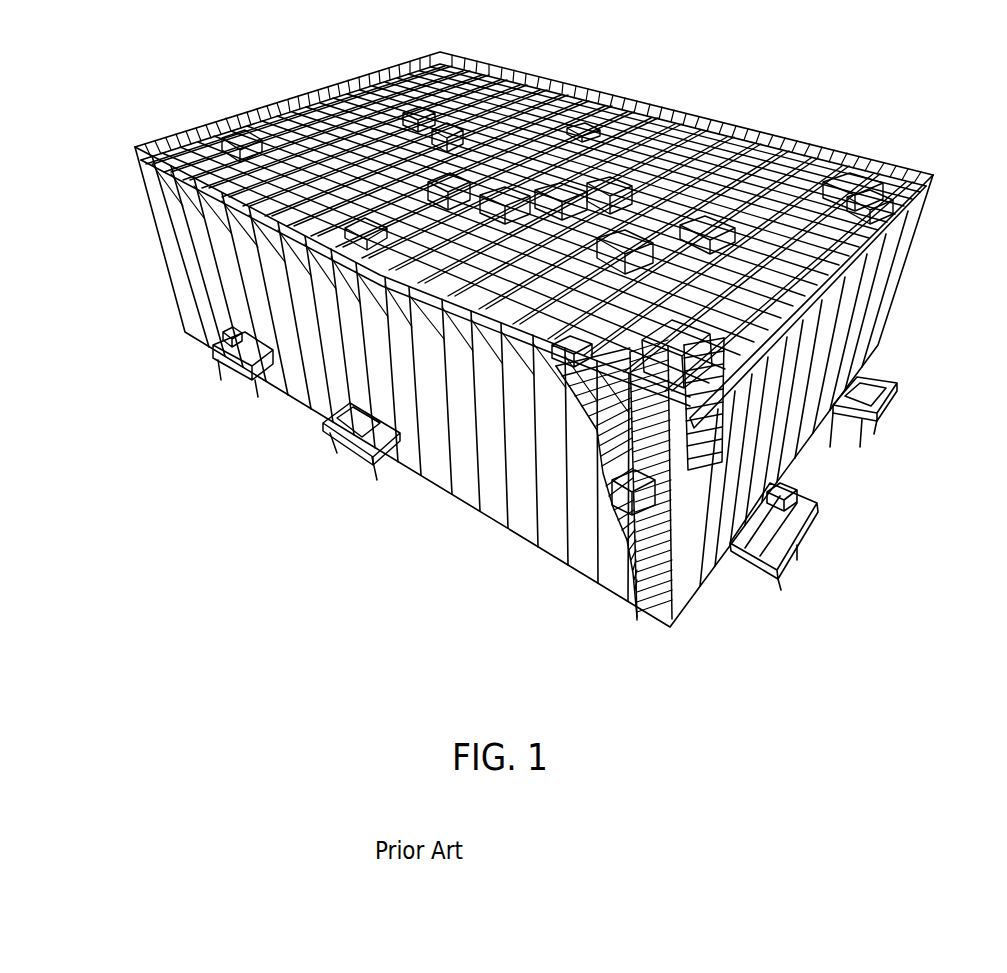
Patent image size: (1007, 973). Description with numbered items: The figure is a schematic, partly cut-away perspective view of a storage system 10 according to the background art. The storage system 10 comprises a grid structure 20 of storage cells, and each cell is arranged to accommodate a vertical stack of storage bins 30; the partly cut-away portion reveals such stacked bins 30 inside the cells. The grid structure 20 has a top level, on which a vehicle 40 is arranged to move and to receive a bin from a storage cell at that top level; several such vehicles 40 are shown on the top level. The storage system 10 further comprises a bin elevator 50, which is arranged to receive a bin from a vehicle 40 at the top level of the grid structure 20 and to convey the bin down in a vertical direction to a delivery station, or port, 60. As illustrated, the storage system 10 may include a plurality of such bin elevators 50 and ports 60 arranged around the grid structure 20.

The storage system 10 is at (118, 280).
The grid structure 20 is at (430, 72).
The storage bins 30 is at (666, 577).
The vehicle 40 is at (553, 80).
The bin elevator 50 is at (355, 362).
The delivery station (port) 60 is at (362, 440).